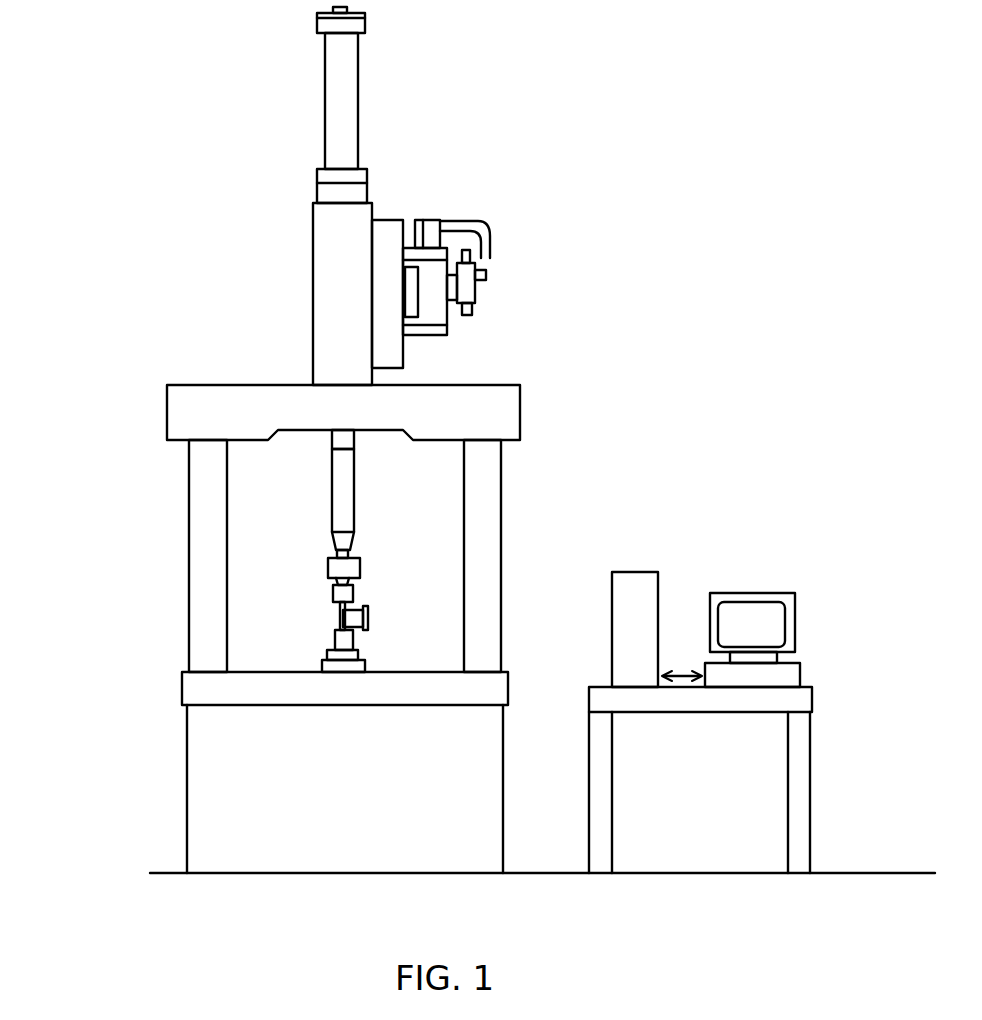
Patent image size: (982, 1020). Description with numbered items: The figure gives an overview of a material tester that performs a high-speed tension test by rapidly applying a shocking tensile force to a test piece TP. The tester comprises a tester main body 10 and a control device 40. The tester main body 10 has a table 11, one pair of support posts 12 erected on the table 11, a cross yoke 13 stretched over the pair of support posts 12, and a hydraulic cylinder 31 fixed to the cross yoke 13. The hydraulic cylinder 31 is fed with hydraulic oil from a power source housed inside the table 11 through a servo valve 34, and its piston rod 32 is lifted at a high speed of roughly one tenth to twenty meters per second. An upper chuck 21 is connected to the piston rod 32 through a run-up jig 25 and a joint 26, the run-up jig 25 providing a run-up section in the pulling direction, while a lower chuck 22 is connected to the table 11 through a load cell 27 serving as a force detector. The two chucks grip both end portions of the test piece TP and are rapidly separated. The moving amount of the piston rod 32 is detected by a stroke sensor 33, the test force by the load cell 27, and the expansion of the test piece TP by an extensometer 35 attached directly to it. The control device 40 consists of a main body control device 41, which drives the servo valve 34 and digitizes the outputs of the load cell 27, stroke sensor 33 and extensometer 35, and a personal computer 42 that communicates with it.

The tester main body 10 is at (236, 142).
The table 11 is at (195, 688).
The support posts 12 is at (200, 487).
The cross yoke 13 is at (180, 408).
The upper chuck 21 is at (353, 593).
The lower chuck 22 is at (343, 640).
The run-up jig 25 is at (332, 498).
The joint 26 is at (328, 566).
The load cell 27 is at (320, 665).
The hydraulic cylinder 31 is at (325, 262).
The piston rod 32 is at (332, 440).
The stroke sensor 33 is at (355, 25).
The servo valve 34 is at (383, 230).
The extensometer 35 is at (367, 615).
The test piece TP is at (338, 620).
The control device 40 is at (706, 465).
The main body control device 41 is at (635, 571).
The personal computer 42 is at (795, 672).